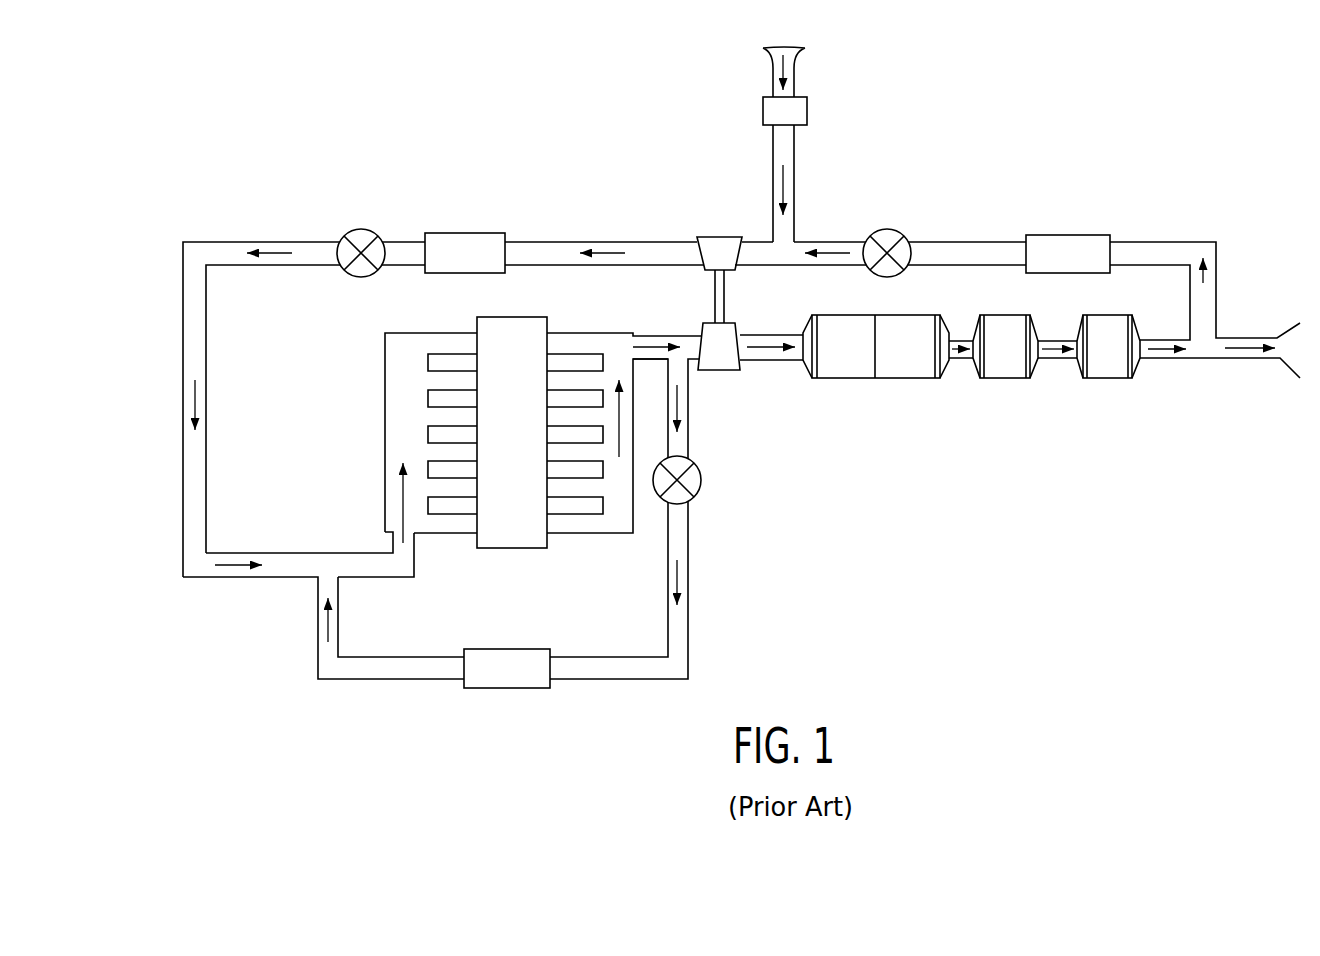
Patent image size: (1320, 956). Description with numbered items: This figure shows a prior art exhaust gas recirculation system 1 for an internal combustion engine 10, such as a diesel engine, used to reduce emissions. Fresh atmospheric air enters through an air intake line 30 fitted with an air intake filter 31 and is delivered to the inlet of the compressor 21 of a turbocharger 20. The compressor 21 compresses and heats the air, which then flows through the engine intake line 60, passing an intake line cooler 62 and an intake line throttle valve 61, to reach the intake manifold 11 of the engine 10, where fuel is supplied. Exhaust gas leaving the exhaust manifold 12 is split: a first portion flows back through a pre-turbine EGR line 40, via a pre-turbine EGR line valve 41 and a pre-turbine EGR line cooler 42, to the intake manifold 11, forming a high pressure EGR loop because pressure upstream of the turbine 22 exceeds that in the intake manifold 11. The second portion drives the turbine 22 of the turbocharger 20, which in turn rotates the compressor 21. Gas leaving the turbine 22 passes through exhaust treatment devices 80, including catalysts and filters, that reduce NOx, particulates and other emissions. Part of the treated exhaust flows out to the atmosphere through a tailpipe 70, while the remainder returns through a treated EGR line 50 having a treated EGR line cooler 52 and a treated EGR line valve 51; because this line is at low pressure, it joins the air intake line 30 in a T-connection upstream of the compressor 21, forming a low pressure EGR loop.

The exhaust gas recirculation (EGR) system 1 is at (1113, 163).
The internal combustion engine 10 is at (520, 317).
The intake manifold 11 is at (385, 417).
The exhaust manifold 12 is at (574, 355).
The turbocharger 20 is at (731, 306).
The compressor 21 is at (697, 237).
The turbine 22 is at (720, 365).
The air intake line 30 is at (763, 187).
The air intake filter 31 is at (763, 110).
The pre-turbine EGR line 40 is at (697, 440).
The pre-turbine EGR line valve 41 is at (699, 486).
The pre-turbine EGR line cooler 42 is at (551, 657).
The treated EGR line 50 is at (968, 232).
The treated EGR line valve 51 is at (880, 230).
The treated EGR line cooler 52 is at (1050, 235).
The engine intake line 60 is at (178, 372).
The intake line (throttle) valve 61 is at (367, 230).
The intake line cooler 62 is at (462, 233).
The tailpipe 70 is at (1232, 338).
The exhaust treatment devices 80 is at (1149, 318).